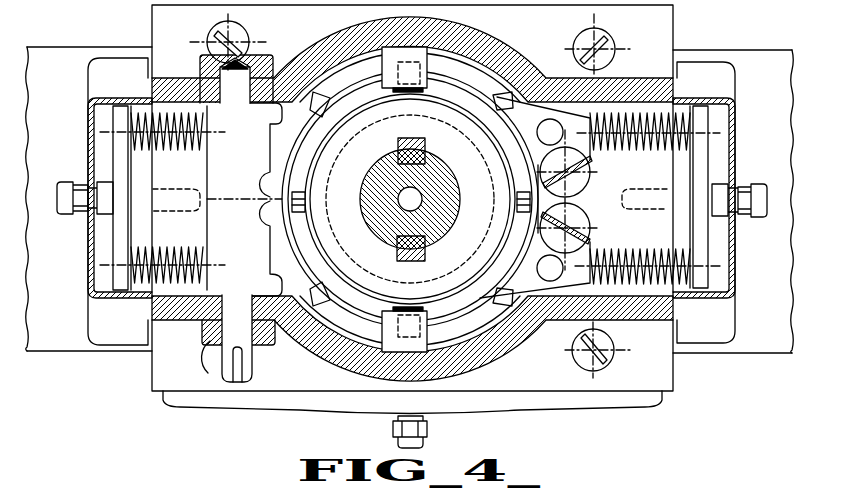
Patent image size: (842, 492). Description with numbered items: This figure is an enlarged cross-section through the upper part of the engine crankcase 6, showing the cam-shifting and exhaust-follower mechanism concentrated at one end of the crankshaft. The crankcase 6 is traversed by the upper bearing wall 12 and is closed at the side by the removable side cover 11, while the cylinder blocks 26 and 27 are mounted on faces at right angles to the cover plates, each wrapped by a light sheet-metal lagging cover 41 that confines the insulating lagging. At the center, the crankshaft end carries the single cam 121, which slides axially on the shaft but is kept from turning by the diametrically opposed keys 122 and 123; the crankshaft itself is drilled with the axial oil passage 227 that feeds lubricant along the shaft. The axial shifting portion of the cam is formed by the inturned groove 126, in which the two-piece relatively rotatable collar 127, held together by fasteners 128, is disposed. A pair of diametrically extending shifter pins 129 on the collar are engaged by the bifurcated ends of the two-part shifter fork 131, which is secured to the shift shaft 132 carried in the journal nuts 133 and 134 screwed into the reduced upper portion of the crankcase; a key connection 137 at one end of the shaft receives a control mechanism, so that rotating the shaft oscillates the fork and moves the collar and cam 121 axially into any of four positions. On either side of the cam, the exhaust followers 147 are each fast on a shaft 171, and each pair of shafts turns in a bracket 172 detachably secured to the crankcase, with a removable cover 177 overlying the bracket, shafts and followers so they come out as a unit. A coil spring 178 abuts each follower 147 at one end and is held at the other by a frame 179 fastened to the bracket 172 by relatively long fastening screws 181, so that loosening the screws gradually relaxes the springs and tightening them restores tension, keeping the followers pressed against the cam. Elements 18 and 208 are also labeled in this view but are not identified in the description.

The crankcase 6 is at (667, 377).
The side cover 11 is at (308, 404).
The upper bearing wall 12 is at (493, 338).
The shaft hub 18 is at (445, 180).
The cylinder block 26 is at (75, 52).
The cylinder block 27 is at (723, 50).
The lagging cover 41 is at (75, 353).
The cam 121 is at (491, 84).
The key 122 is at (425, 148).
The key 123 is at (425, 254).
The inturned groove 126 is at (366, 252).
The relatively rotatable collar 127 is at (467, 297).
The fasteners 128 is at (517, 214).
The shifter pin 129 is at (426, 77).
The shifter fork 131 is at (338, 63).
The shift shaft 132 is at (227, 77).
The journal nut 133 is at (263, 53).
The journal nut 134 is at (265, 348).
The key connection 137 is at (240, 370).
The follower 147 is at (323, 103).
The shaft 171 is at (590, 176).
The bracket 172 is at (140, 232).
The removable cover 177 is at (90, 143).
The coil spring 178 is at (186, 150).
The frame 179 is at (118, 254).
The fastening screws 181 is at (107, 211).
The screw 208 is at (216, 37).
The axial oil passage 227 is at (404, 205).